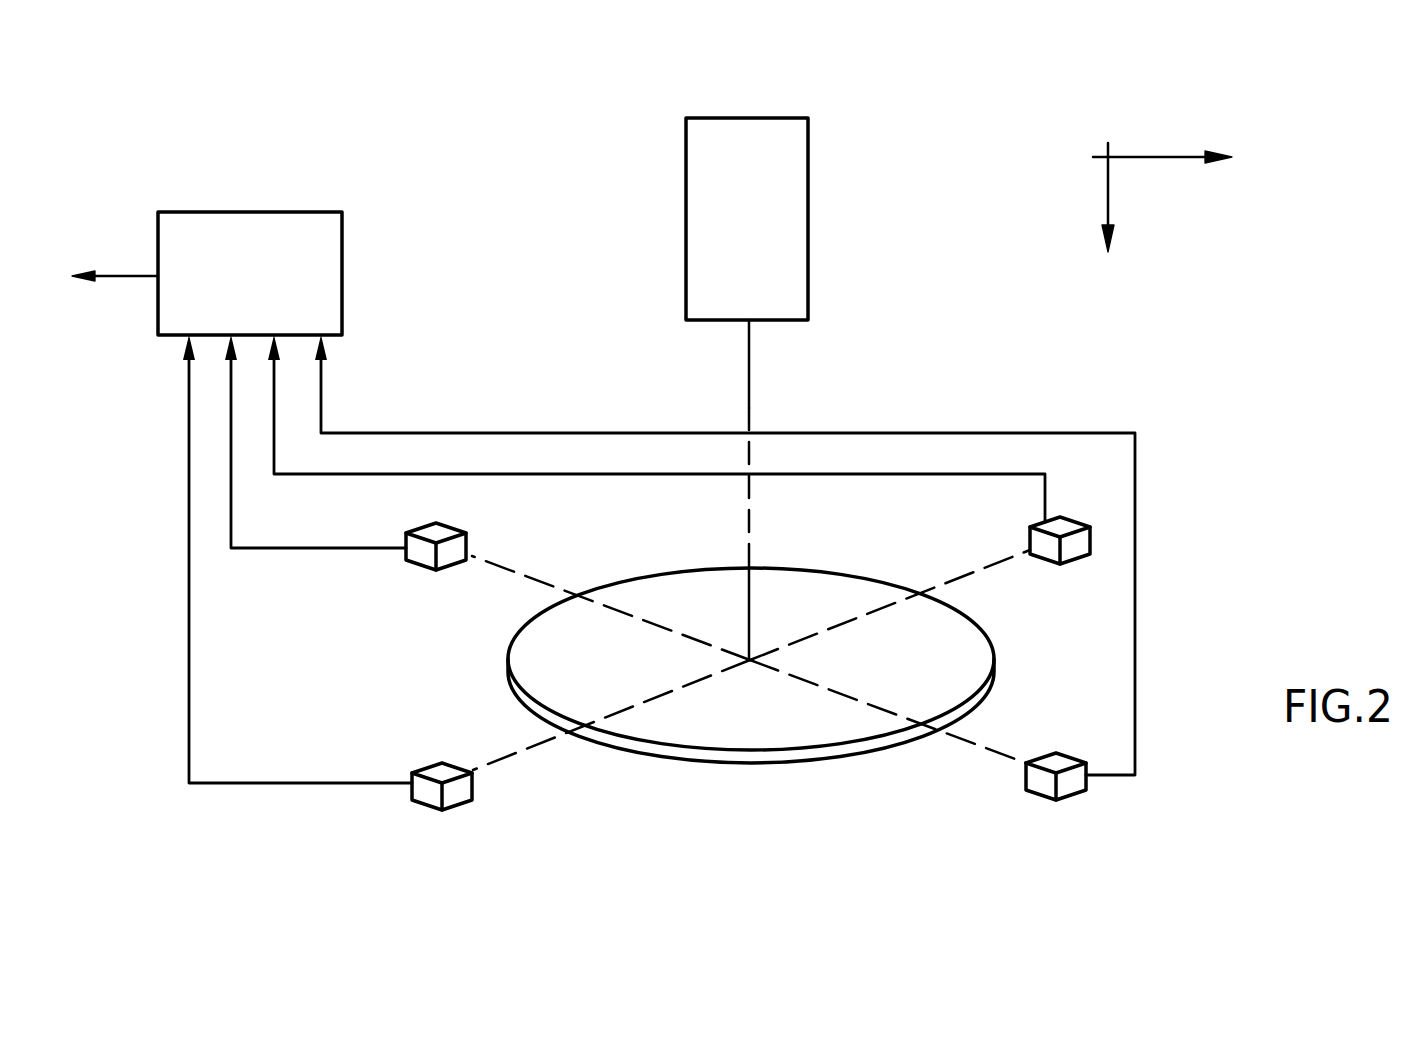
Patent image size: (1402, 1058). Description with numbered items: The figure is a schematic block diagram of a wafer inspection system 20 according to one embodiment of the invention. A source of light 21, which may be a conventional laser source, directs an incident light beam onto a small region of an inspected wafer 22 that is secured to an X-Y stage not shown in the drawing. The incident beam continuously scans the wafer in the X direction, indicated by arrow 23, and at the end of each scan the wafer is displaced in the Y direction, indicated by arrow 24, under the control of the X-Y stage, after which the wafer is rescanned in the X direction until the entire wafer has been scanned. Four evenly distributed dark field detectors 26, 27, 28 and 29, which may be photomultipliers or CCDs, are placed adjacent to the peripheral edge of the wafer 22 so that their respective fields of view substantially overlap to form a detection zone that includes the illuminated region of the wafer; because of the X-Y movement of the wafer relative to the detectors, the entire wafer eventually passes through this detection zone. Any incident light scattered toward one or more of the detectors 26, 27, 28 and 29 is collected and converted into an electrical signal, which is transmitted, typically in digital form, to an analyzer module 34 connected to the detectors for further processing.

The system 20 is at (392, 133).
The source of light 21 is at (808, 227).
The inspected wafer 22 is at (738, 763).
The X direction arrow 23 is at (1157, 152).
The Y direction arrow 24 is at (1108, 190).
The dark field detector 26 is at (420, 563).
The dark field detector 27 is at (1030, 540).
The dark field detector 28 is at (1066, 798).
The dark field detector 29 is at (452, 807).
The analyzer module 34 is at (244, 212).